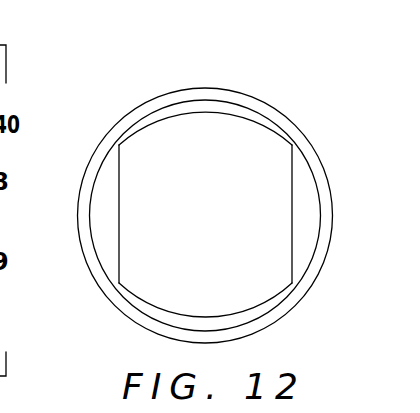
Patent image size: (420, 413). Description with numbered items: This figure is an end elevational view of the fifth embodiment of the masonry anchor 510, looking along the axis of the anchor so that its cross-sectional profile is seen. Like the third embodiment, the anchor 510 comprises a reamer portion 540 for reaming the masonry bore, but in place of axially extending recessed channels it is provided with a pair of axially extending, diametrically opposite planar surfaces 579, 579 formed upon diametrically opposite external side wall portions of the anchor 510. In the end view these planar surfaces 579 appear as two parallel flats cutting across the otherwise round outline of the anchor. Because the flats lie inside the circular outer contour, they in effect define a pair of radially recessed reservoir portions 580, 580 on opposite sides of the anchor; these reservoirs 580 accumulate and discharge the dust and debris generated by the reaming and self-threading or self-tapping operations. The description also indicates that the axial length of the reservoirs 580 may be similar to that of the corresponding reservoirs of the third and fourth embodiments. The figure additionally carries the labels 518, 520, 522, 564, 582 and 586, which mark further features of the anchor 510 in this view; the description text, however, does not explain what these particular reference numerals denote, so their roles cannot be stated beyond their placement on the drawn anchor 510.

The masonry anchor 510 is at (329, 142).
The central opening 518 is at (225, 265).
The outer ring 520 is at (241, 97).
The inner ring surface 522 is at (251, 110).
The reamer portion 540 is at (206, 110).
The flat face 564 is at (120, 161).
The planar surfaces 579 is at (120, 214).
The reservoir portions 580 is at (110, 240).
The insert end 582 is at (119, 147).
The insert edge 586 is at (111, 148).